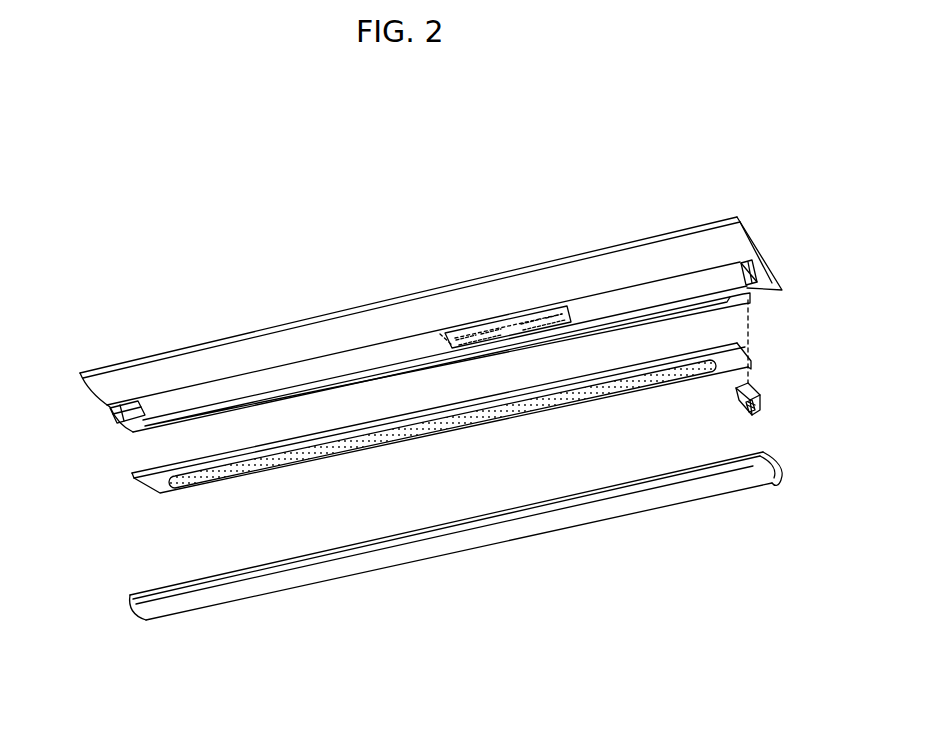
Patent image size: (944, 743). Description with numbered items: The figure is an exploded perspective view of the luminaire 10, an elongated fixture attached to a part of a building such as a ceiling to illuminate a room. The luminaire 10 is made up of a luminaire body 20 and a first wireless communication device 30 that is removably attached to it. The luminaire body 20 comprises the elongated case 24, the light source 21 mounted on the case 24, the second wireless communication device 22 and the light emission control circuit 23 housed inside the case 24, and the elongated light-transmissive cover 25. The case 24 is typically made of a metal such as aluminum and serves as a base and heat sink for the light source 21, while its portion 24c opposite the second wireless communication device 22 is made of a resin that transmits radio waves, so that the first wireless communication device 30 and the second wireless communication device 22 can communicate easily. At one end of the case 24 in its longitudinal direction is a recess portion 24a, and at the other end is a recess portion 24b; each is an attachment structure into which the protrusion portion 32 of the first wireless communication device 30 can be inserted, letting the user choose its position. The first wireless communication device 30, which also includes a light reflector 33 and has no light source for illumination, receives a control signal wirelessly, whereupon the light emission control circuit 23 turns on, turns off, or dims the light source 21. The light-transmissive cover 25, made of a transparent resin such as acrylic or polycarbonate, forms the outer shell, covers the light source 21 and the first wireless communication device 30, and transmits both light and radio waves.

The luminaire 10 is at (777, 143).
The luminaire body 20 is at (668, 207).
The light source 21 is at (130, 482).
The second wireless communication device 22 is at (512, 310).
The light emission control circuit 23 is at (438, 328).
The case 24 is at (107, 392).
The recess portion 24a is at (758, 282).
The recess portion 24b is at (127, 425).
The portion of case 24c is at (566, 304).
The light-transmissive cover 25 is at (433, 558).
The first wireless communication device 30 is at (801, 381).
The protrusion portion 32 is at (757, 388).
The light reflector 33 is at (761, 409).